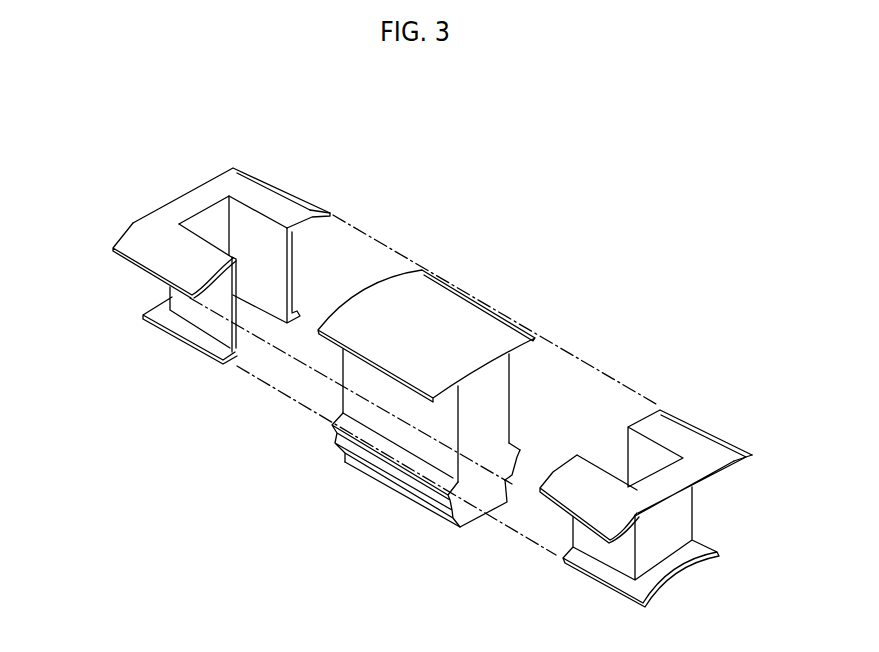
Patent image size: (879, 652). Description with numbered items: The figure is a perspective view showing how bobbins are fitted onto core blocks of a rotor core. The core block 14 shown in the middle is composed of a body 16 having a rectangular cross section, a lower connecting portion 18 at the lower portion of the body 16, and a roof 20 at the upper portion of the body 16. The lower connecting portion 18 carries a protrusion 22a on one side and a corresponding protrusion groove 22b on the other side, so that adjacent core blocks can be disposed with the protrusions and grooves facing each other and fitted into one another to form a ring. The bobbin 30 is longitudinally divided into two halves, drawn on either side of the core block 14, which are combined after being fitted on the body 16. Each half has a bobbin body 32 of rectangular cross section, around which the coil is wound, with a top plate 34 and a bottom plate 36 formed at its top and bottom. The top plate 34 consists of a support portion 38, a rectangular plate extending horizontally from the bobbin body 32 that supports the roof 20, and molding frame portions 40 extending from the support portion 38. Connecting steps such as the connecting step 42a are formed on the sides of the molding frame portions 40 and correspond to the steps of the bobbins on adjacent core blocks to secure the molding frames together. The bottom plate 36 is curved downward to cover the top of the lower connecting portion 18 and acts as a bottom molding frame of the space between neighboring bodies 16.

The core block 14 is at (440, 410).
The body 16 is at (510, 381).
The lower connecting portion 18 is at (472, 516).
The roof 20 is at (452, 295).
The protrusion 22a is at (452, 518).
The protrusion groove 22b is at (520, 471).
The bobbin 30 is at (652, 479).
The bobbin body 32 is at (291, 265).
The top plate 34 is at (252, 118).
The bottom plate 36 is at (185, 345).
The support portion 38 is at (206, 189).
The molding frame portion 40 is at (243, 171).
The connecting step 42a is at (113, 249).